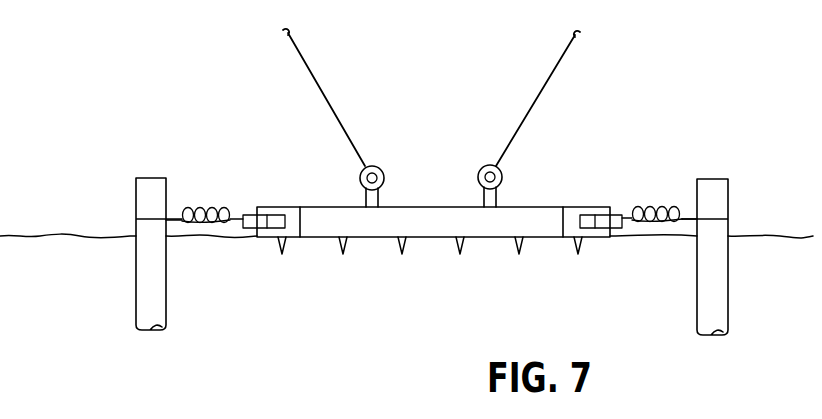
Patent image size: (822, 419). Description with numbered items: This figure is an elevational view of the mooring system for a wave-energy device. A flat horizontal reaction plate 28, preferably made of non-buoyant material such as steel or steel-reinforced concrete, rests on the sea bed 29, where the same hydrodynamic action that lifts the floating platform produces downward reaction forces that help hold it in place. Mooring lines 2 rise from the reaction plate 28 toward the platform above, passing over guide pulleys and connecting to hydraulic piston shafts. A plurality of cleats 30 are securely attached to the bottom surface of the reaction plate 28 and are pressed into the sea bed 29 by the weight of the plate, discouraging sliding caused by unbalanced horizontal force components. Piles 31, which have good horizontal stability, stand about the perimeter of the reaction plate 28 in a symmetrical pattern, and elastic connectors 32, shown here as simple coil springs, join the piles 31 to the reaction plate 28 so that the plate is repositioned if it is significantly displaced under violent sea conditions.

The mooring lines 2 is at (317, 83).
The reaction plate 28 is at (520, 207).
The sea bed 29 is at (71, 232).
The cleats 30 is at (285, 244).
The piles 31 is at (140, 190).
The elastic connectors 32 is at (211, 208).